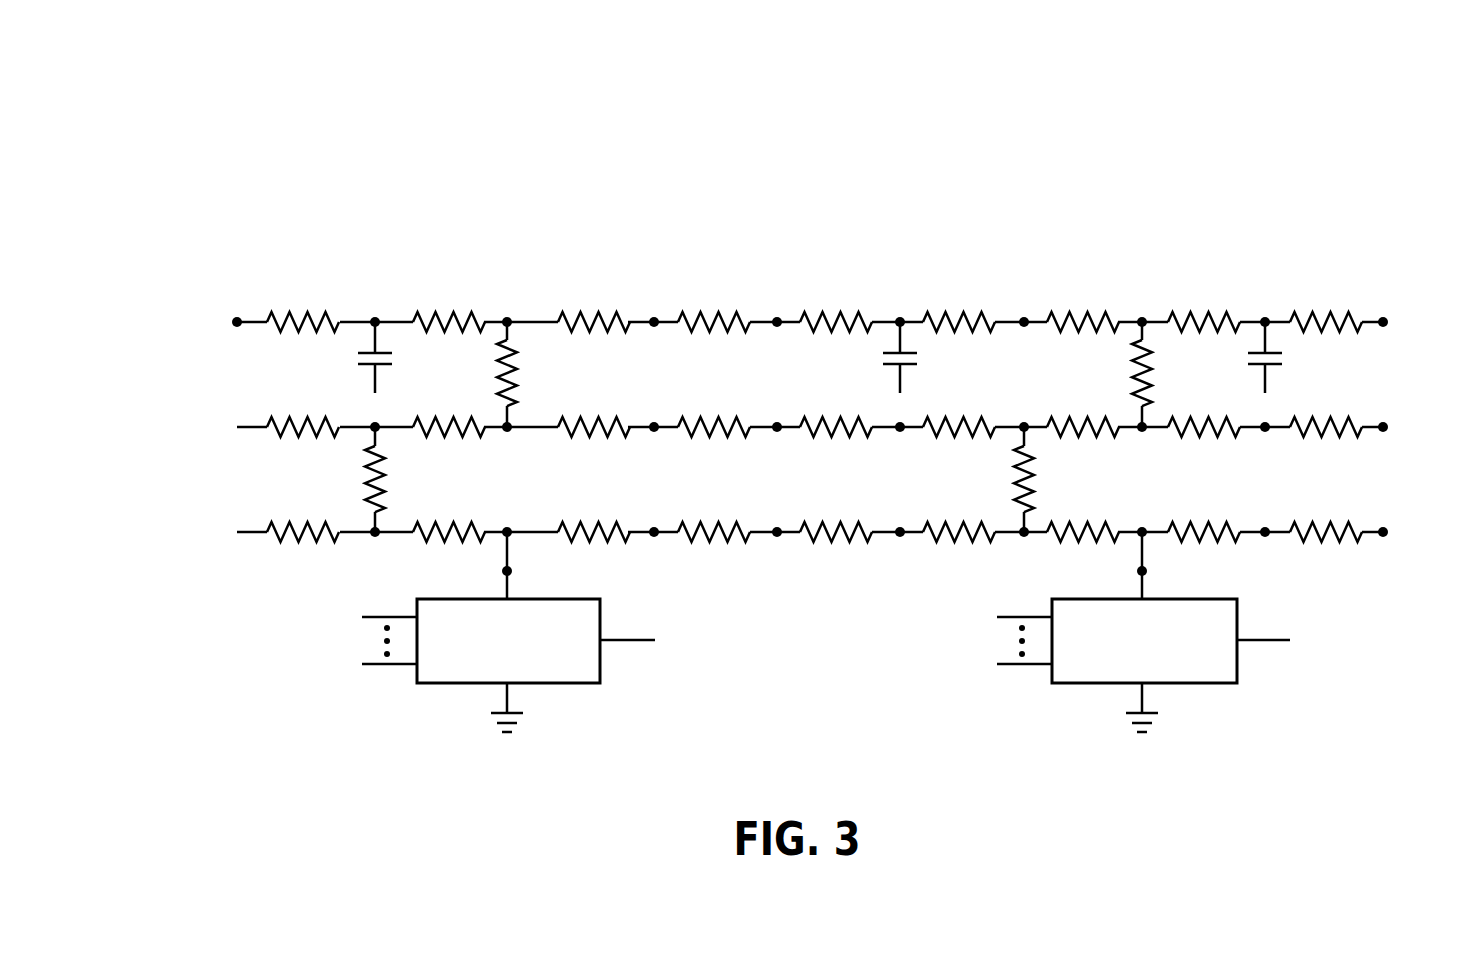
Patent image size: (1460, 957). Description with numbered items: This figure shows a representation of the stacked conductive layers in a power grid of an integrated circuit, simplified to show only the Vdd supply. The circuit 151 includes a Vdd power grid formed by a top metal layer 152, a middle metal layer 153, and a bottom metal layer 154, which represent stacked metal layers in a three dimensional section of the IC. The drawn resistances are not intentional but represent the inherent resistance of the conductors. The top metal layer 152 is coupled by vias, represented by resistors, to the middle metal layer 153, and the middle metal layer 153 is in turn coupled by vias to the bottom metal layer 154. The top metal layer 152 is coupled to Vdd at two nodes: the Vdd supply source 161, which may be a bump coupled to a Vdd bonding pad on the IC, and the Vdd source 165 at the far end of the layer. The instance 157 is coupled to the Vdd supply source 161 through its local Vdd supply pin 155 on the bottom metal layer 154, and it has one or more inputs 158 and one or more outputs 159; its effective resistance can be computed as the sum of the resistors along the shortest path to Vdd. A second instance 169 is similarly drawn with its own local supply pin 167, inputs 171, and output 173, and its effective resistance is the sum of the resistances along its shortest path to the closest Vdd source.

The circuit 151 is at (474, 225).
The top metal layer 152 is at (227, 323).
The middle metal layer 153 is at (227, 428).
The bottom metal layer 154 is at (227, 533).
The Vdd supply pin 155 is at (512, 571).
The instance 157 is at (567, 684).
The inputs 158 is at (384, 671).
The outputs 159 is at (633, 641).
The Vdd supply source 161 is at (242, 320).
The Vdd source 165 is at (1386, 319).
The power supply node of second instance 167 is at (1147, 571).
The instance 169 is at (1203, 684).
The inputs of second instance 171 is at (1020, 671).
The output of second instance 173 is at (1270, 641).